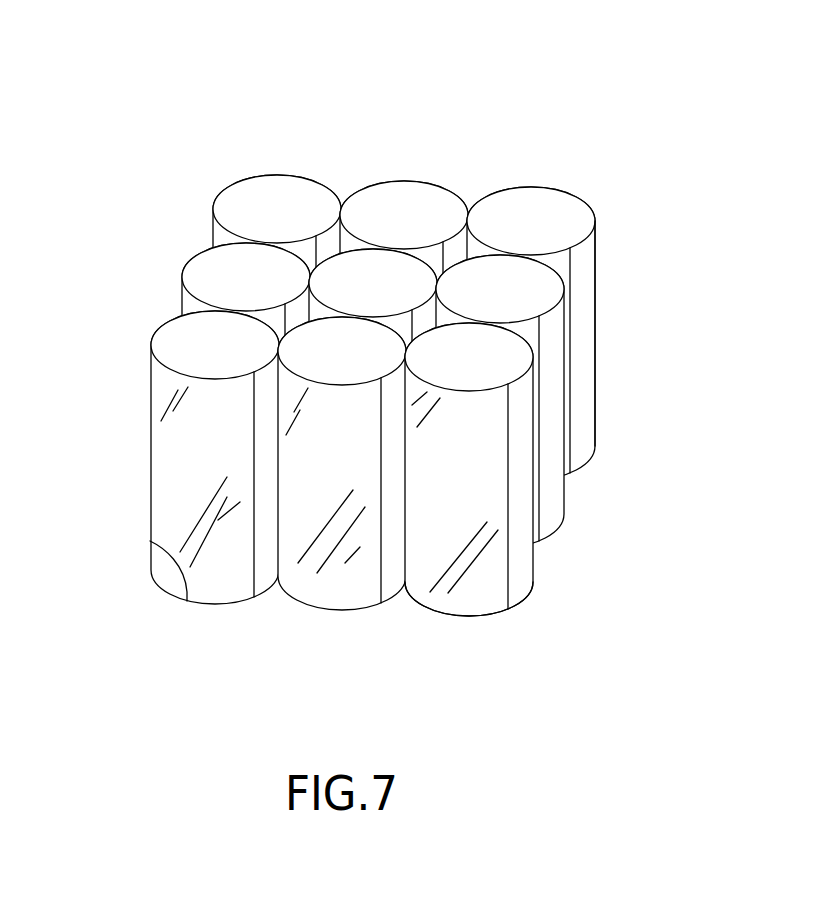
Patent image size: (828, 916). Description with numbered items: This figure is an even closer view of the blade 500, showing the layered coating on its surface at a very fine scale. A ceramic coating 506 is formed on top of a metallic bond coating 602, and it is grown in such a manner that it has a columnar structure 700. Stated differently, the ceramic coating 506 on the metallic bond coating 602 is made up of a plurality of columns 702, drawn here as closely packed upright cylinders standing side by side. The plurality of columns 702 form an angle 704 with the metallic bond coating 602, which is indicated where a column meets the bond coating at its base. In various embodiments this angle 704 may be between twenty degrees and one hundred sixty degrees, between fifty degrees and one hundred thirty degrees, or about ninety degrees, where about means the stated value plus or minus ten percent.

The blade 500 is at (371, 358).
The columnar structure 700 is at (533, 188).
The plurality of columns 702 is at (592, 200).
The ceramic coating 506 is at (157, 291).
The angle 704 is at (172, 554).
The metallic bond coating 602 is at (457, 617).